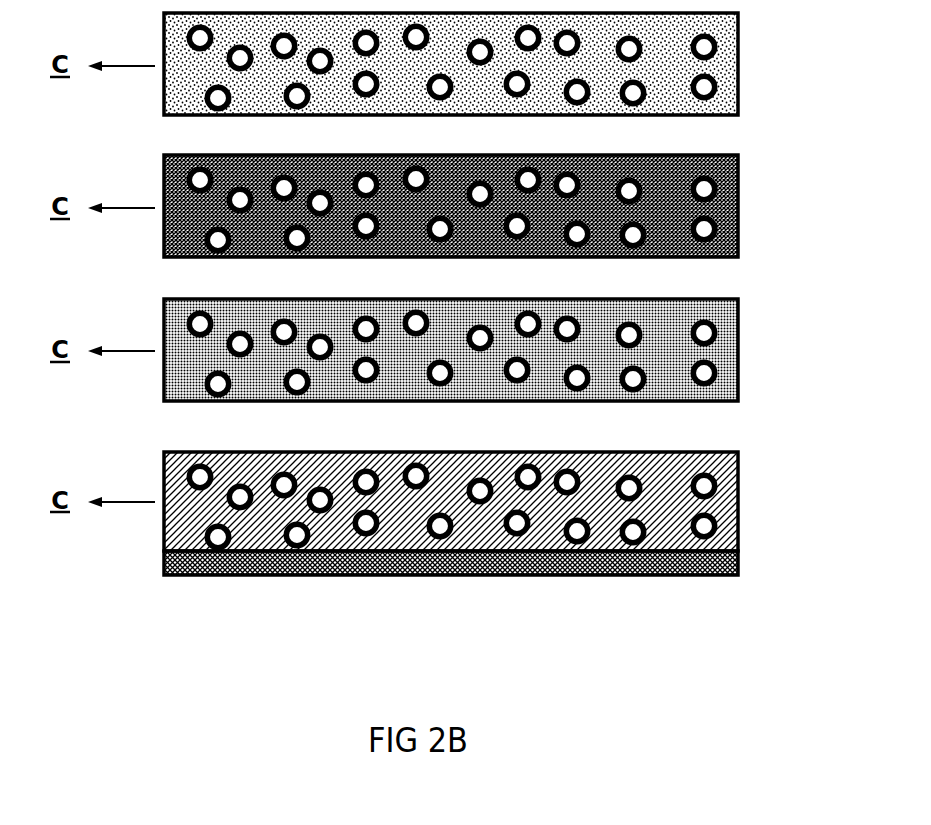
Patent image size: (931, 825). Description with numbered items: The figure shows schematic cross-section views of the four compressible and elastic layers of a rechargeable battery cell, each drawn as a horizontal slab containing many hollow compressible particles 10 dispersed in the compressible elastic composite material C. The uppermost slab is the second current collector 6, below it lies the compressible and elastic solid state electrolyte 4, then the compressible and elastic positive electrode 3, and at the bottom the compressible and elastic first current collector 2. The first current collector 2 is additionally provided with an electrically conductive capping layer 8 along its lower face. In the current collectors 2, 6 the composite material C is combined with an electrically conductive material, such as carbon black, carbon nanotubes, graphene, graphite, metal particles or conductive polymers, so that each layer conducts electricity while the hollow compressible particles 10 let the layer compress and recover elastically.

The compressible and elastic first current collector 2 is at (469, 501).
The compressible and elastic positive electrode 3 is at (469, 350).
The compressible and elastic solid state electrolyte 4 is at (469, 206).
The second current collector 6 is at (469, 64).
The electrically conductive capping layer 8 is at (198, 563).
The hollow compressible particles 10 is at (219, 98).